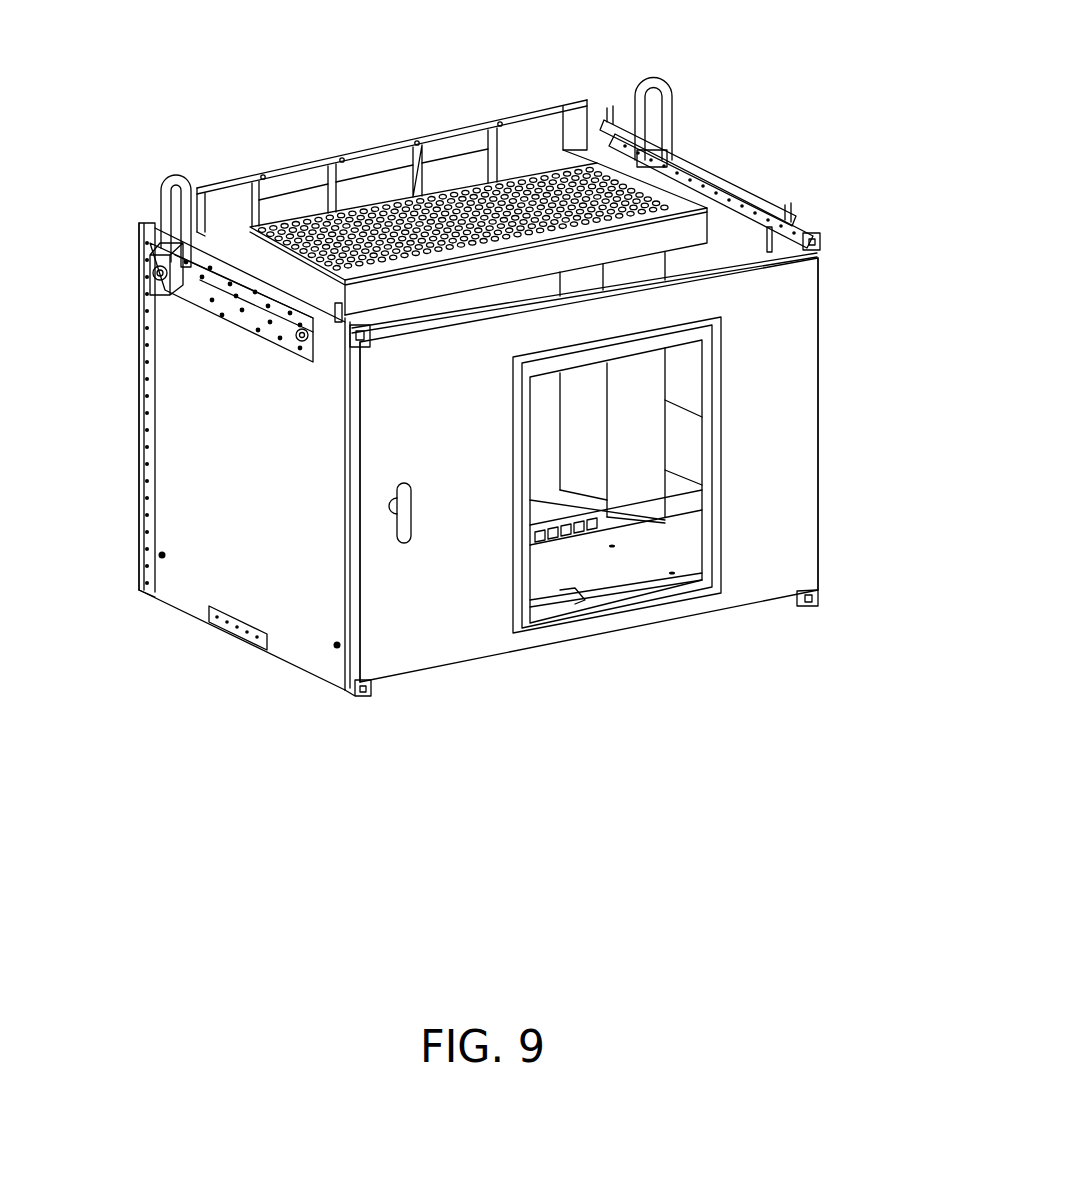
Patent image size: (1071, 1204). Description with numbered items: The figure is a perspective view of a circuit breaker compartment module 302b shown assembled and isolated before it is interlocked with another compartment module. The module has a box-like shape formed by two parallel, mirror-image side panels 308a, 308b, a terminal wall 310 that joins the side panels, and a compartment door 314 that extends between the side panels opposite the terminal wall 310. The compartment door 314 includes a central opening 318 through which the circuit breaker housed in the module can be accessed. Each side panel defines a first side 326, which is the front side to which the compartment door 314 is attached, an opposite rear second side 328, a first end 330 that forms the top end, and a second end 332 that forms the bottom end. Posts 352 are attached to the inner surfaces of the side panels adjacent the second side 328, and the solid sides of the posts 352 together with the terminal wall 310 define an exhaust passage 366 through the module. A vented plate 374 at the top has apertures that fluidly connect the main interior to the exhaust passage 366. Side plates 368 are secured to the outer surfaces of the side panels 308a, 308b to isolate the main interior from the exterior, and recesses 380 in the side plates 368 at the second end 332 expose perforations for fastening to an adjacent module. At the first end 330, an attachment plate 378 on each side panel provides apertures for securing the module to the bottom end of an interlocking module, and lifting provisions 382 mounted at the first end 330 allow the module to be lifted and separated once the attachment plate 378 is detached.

The circuit breaker compartment module 302b is at (727, 76).
The side panel 308a is at (130, 366).
The side panel 308b is at (850, 212).
The terminal wall 310 is at (420, 147).
The compartment door 314 is at (440, 640).
The central opening 318 is at (588, 558).
The first side 326 is at (835, 505).
The second side 328 is at (128, 500).
The first end 330 is at (767, 207).
The second end 332 is at (803, 616).
The post 352 is at (208, 205).
The exhaust passage 366 is at (376, 184).
The side plate 368 is at (265, 510).
The vented plate 374 is at (677, 147).
The attachment plate 378 is at (258, 268).
The recess 380 is at (246, 640).
The lifting provision 382 is at (168, 176).